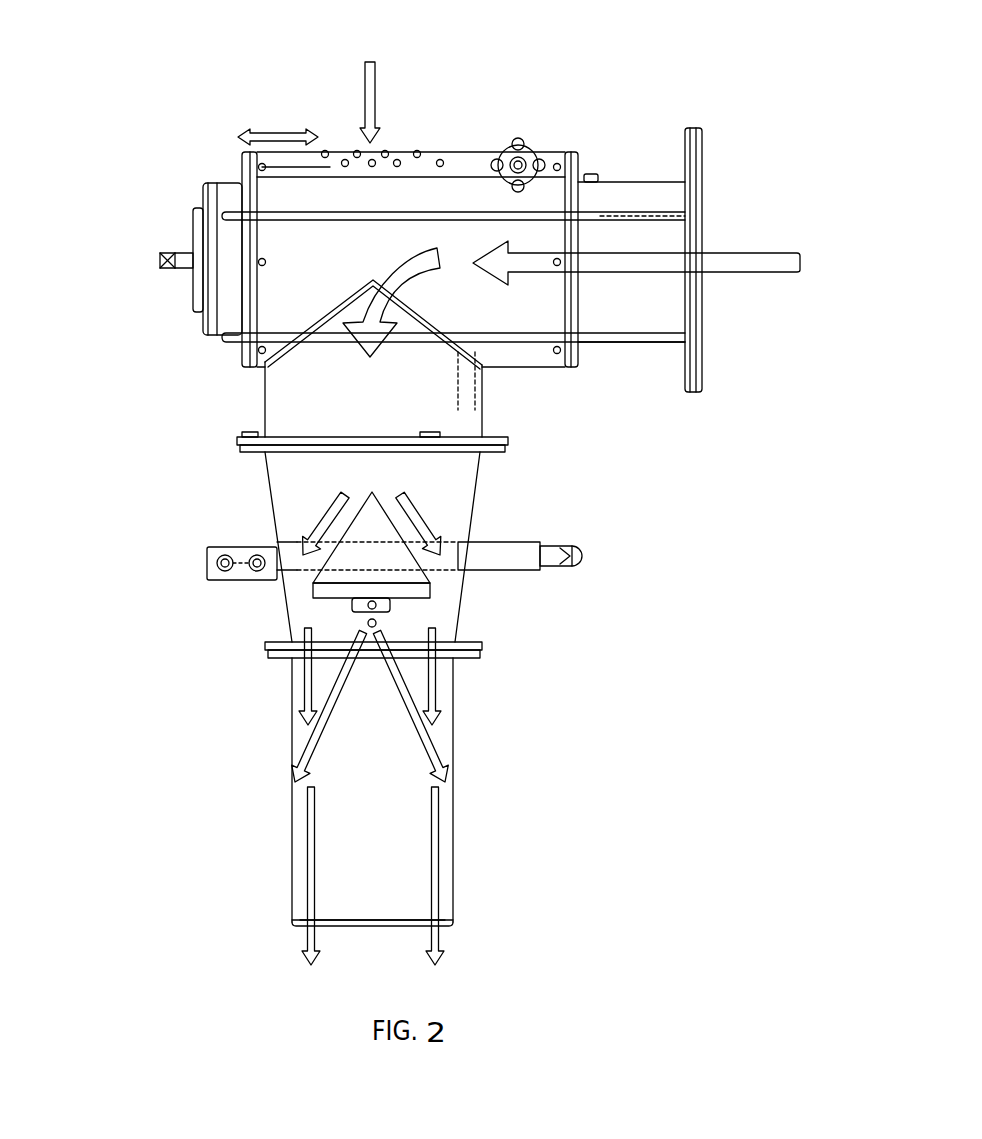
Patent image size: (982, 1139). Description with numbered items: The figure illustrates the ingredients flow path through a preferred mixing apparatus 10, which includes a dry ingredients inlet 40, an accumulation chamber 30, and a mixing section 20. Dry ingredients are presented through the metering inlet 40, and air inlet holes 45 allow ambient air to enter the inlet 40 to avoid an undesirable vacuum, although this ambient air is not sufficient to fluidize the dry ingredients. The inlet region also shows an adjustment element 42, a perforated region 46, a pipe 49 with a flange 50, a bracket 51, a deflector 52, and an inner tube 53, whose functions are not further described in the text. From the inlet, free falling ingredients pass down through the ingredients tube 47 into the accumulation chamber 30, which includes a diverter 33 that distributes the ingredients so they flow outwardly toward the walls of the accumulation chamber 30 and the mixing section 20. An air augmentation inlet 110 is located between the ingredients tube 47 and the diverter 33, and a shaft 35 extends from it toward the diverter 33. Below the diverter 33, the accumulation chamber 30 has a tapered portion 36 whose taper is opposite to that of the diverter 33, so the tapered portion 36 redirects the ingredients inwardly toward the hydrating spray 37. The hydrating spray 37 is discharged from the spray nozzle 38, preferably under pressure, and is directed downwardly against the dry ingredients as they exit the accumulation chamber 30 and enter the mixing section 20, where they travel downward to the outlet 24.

The mixing apparatus 10 is at (202, 72).
The mixing section 20 is at (457, 762).
The outlet 24 is at (400, 925).
The accumulation chamber 30 is at (265, 478).
The diverter 33 is at (385, 551).
The shaft 35 is at (515, 530).
The tapered portion 36 is at (462, 620).
The hydrating spray 37 is at (377, 622).
The spray nozzle 38 is at (369, 603).
The dry ingredients inlet 40 is at (240, 152).
The adjustment knob 42 is at (540, 140).
The air inlet holes 45 is at (365, 72).
The perforations 46 is at (437, 148).
The ingredients tube 47 is at (487, 402).
The pipe 49 is at (633, 160).
The flange 50 is at (705, 153).
The bracket 51 is at (592, 165).
The deflector plate 52 is at (310, 302).
The inner tube 53 is at (665, 218).
The air augmentation inlet 110 is at (237, 550).